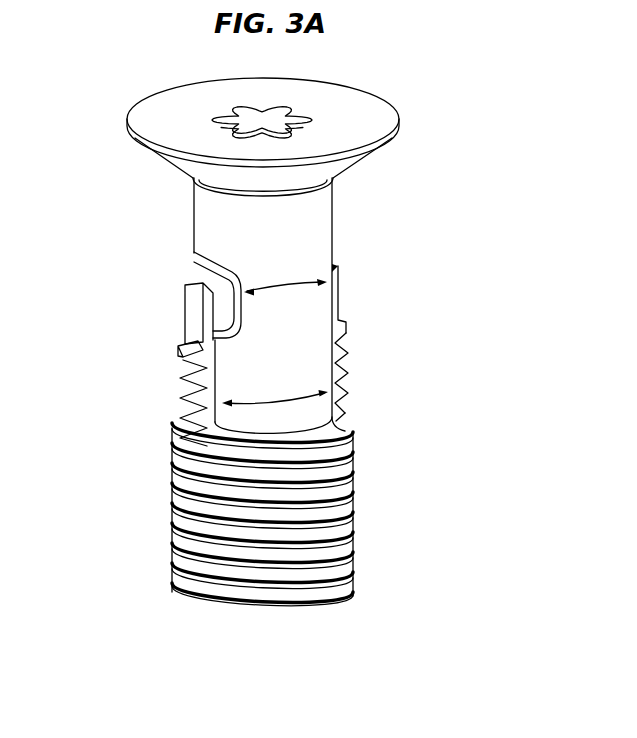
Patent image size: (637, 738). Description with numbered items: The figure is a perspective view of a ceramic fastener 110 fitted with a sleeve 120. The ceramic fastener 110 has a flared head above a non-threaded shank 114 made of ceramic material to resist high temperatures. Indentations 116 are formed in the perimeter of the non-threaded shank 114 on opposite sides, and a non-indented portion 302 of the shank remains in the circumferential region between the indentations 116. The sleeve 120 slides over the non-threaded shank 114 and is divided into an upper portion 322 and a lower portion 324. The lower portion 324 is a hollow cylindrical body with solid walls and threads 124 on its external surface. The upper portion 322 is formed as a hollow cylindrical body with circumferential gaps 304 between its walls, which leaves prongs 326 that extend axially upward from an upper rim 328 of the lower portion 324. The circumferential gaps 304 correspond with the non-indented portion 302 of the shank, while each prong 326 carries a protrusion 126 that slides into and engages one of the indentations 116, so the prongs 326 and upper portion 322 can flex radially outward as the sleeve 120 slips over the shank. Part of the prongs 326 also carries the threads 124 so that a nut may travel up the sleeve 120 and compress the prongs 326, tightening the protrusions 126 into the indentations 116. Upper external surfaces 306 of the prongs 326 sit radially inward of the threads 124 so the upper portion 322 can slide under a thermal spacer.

The ceramic fastener 110 is at (123, 85).
The non-threaded shank 114 is at (333, 205).
The indentations 116 is at (203, 258).
The protrusions 126 is at (215, 312).
The upper external surfaces 306 is at (186, 297).
The non-indented portion 302 is at (305, 291).
The circumferential gaps 304 is at (263, 403).
The upper portion 322 is at (108, 285).
The prongs 326 is at (347, 368).
The upper rim 328 is at (340, 418).
The sleeve 120 is at (440, 455).
The lower portion 324 is at (108, 433).
The threads 124 is at (345, 505).